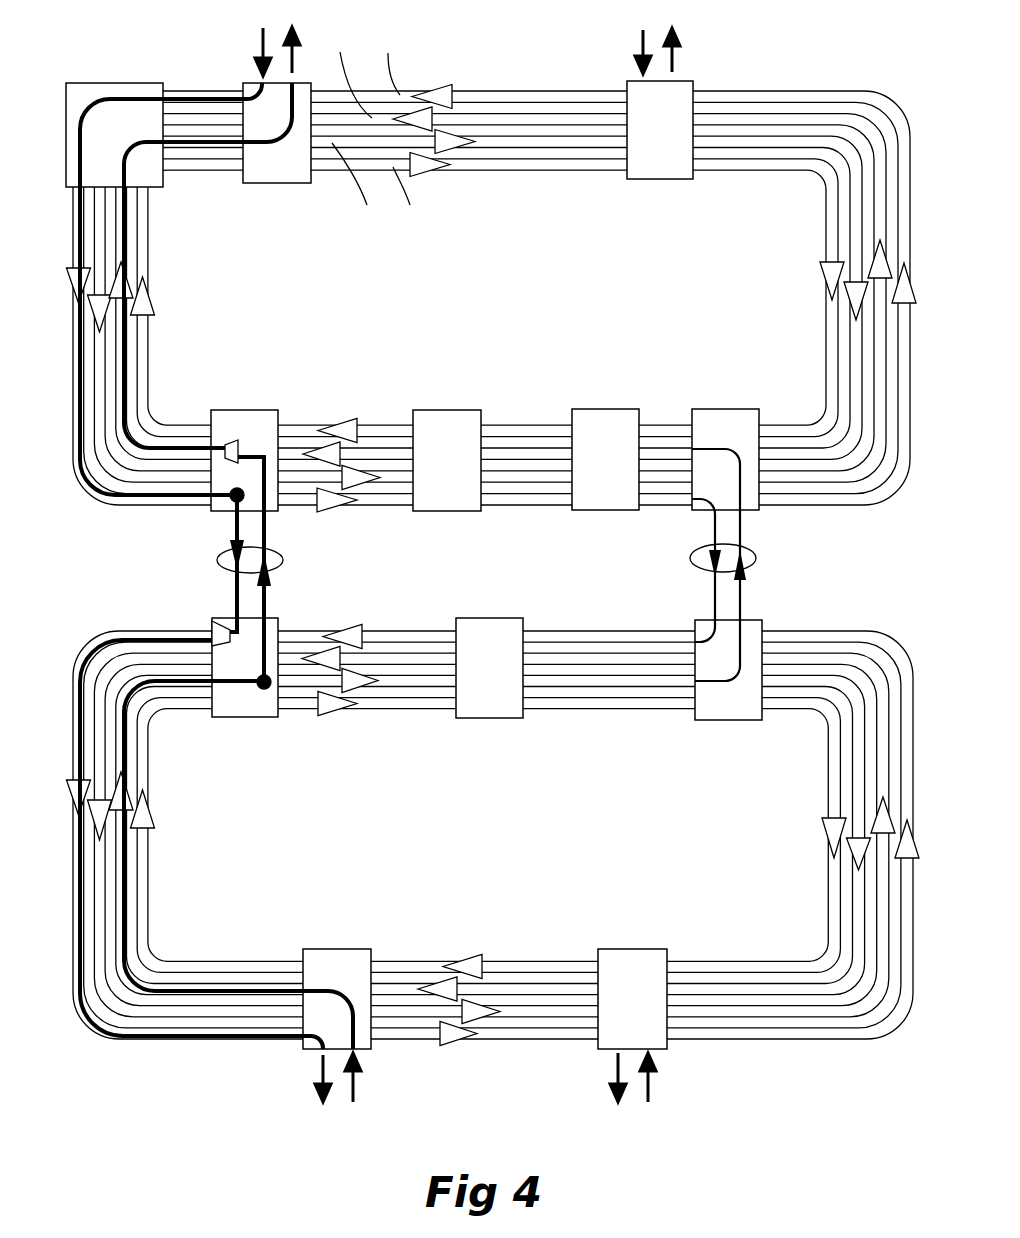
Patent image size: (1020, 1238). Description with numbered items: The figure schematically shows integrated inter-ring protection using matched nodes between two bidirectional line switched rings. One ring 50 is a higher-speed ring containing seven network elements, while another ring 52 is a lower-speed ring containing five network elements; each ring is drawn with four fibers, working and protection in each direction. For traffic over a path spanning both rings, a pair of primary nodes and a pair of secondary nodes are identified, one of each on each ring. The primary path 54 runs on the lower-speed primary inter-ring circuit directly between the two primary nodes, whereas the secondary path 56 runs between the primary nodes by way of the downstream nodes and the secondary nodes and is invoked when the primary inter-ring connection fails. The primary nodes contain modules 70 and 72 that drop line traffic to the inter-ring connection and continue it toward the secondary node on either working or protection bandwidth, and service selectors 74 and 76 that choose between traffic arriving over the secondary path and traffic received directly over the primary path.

The ring 50 is at (751, 178).
The ring 52 is at (751, 948).
The primary path 54 is at (283, 560).
The secondary path 56 is at (758, 557).
The module 70 is at (233, 499).
The module 72 is at (270, 687).
The service selector 74 is at (237, 440).
The service selector 76 is at (216, 622).